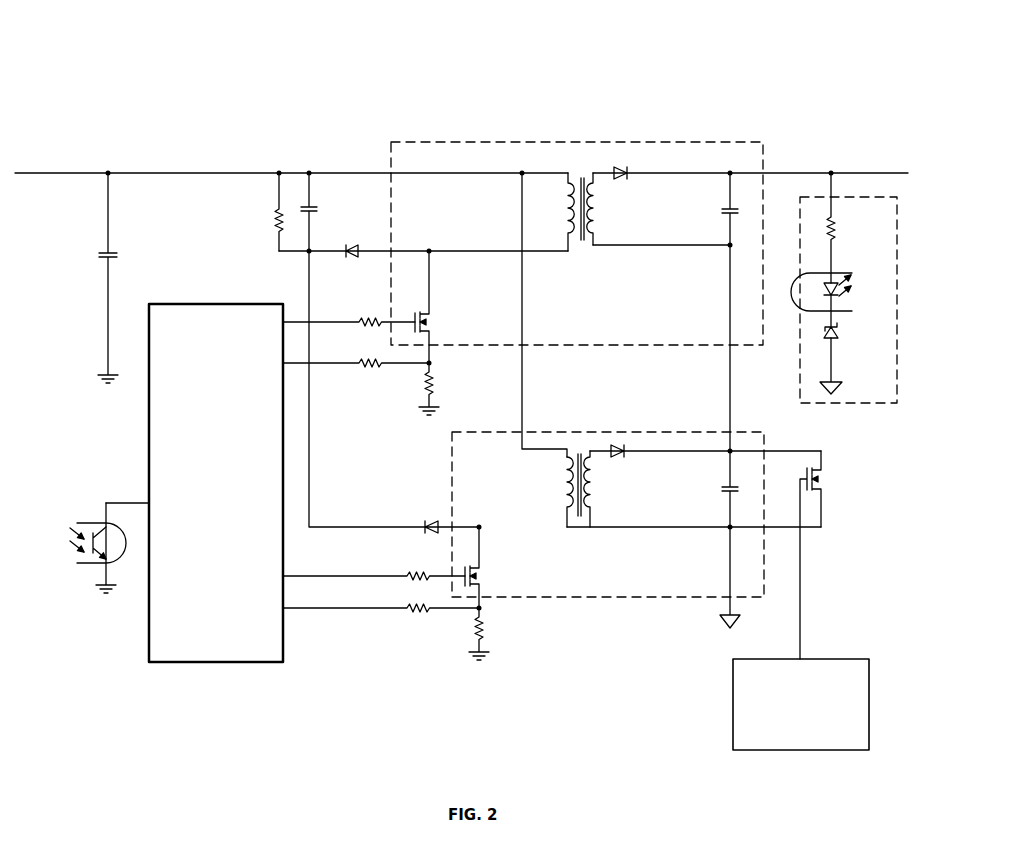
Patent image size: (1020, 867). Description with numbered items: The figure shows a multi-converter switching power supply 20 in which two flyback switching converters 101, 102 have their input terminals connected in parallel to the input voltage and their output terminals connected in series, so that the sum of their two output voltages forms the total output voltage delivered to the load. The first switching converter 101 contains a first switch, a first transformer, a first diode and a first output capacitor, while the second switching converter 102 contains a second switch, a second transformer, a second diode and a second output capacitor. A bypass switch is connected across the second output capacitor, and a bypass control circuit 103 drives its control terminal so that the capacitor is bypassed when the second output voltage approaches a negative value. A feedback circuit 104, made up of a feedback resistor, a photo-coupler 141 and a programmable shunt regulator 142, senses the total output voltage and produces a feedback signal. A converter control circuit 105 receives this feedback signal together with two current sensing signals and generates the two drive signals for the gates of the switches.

The multi-converter switching power supply 20 is at (800, 39).
The switching converter 101 is at (577, 296).
The switching converter 102 is at (636, 514).
The bypass control circuit 103 is at (749, 751).
The feedback circuit 104 is at (826, 405).
The converter control circuit 105 is at (165, 664).
The photo-coupler 141 is at (845, 311).
The programmable shunt regulator 142 is at (840, 340).